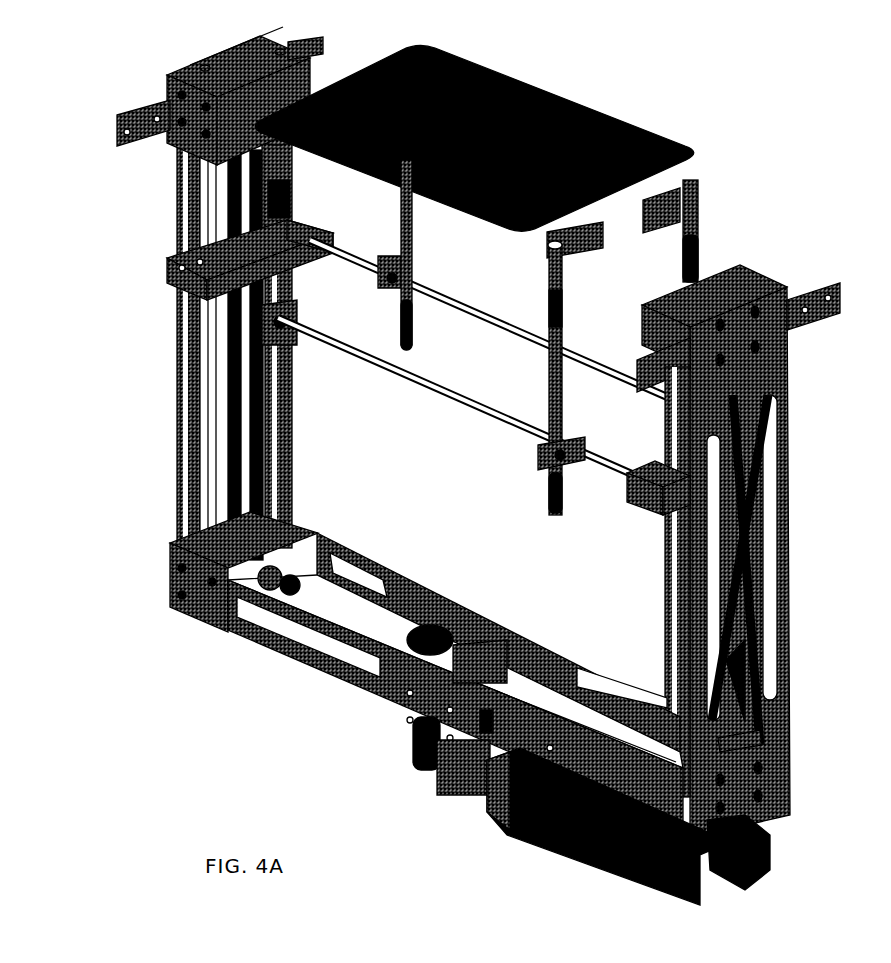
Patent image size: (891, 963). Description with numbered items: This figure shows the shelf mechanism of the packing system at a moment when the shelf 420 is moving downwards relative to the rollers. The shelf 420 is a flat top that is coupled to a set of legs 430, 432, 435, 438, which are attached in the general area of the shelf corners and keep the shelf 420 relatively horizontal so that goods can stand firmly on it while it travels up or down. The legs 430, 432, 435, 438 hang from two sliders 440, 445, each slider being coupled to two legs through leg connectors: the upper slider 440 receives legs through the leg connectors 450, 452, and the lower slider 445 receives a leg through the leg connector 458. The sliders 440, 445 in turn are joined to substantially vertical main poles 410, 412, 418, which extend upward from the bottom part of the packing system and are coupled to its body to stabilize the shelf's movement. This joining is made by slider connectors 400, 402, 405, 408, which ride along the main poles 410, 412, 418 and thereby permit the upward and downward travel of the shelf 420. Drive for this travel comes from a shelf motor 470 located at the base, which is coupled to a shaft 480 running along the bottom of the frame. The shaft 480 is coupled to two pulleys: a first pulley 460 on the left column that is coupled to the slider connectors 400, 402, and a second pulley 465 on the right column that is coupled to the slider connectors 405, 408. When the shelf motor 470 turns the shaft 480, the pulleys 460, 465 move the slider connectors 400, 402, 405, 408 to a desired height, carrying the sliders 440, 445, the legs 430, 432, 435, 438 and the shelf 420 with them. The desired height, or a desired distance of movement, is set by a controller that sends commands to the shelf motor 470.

The slider connector 400 is at (172, 258).
The slider connector 402 is at (313, 250).
The slider connector 405 is at (790, 452).
The slider connector 408 is at (622, 505).
The main pole 410 is at (207, 467).
The main pole 412 is at (275, 465).
The main pole 418 is at (668, 600).
The shelf 420 is at (570, 96).
The leg 430 is at (418, 248).
The leg 432 is at (285, 226).
The leg 435 is at (700, 253).
The leg 438 is at (548, 362).
The slider 440 is at (480, 312).
The slider 445 is at (412, 385).
The leg connector 450 is at (388, 285).
The leg connector 452 is at (282, 343).
The leg connector 458 is at (537, 455).
The first pulley 460 is at (210, 350).
The second pulley 465 is at (760, 745).
The shelf motor 470 is at (530, 842).
The shaft 480 is at (385, 620).